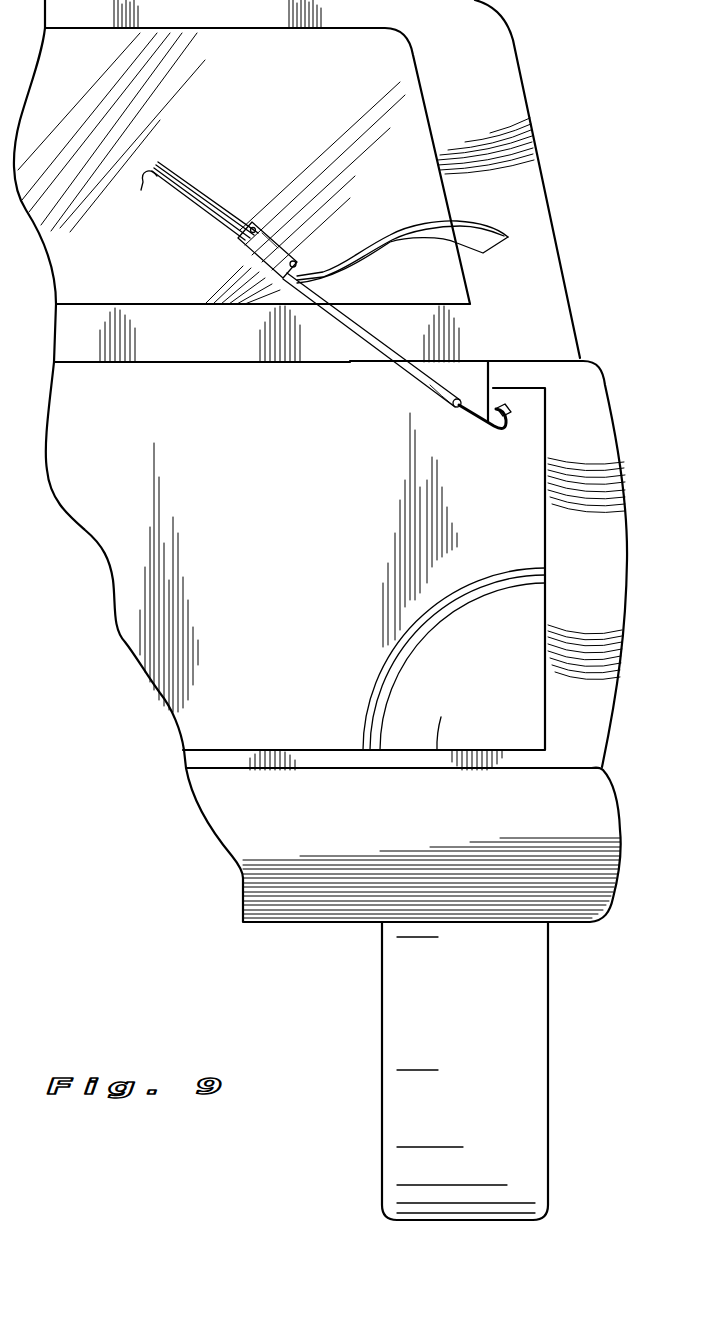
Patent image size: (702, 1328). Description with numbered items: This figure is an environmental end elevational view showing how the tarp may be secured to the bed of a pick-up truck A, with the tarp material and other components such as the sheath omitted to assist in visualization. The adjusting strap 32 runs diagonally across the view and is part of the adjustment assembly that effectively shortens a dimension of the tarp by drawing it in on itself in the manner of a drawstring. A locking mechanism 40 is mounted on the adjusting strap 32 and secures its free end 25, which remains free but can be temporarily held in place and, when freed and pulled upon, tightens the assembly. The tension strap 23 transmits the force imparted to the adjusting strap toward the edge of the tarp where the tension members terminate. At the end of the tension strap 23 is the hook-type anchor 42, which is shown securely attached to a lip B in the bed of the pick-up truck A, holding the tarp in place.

The pick-up truck A is at (526, 95).
The lip B is at (487, 400).
The tension strap 23 is at (365, 337).
The free end of the adjusting strap 25 is at (493, 223).
The adjusting strap 32 is at (197, 198).
The locking mechanism 40 is at (267, 211).
The anchor 42 is at (493, 433).